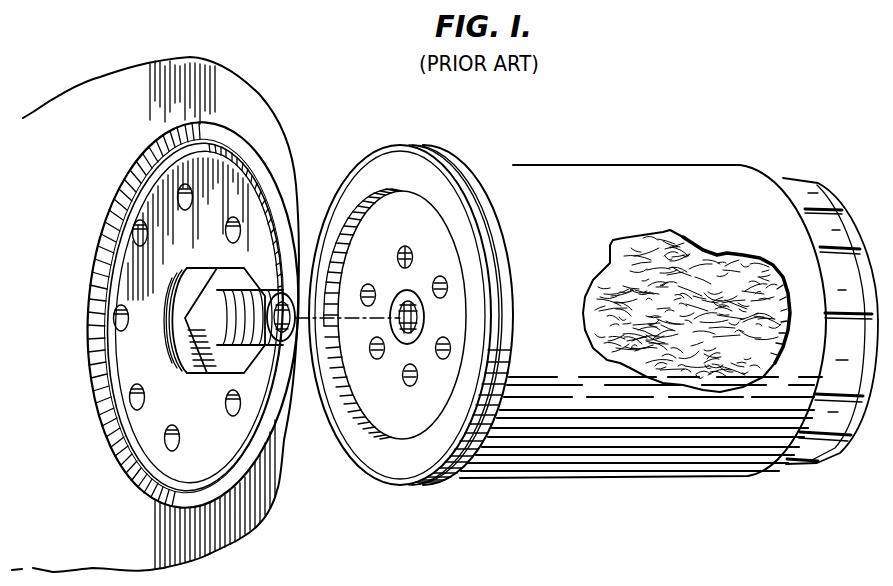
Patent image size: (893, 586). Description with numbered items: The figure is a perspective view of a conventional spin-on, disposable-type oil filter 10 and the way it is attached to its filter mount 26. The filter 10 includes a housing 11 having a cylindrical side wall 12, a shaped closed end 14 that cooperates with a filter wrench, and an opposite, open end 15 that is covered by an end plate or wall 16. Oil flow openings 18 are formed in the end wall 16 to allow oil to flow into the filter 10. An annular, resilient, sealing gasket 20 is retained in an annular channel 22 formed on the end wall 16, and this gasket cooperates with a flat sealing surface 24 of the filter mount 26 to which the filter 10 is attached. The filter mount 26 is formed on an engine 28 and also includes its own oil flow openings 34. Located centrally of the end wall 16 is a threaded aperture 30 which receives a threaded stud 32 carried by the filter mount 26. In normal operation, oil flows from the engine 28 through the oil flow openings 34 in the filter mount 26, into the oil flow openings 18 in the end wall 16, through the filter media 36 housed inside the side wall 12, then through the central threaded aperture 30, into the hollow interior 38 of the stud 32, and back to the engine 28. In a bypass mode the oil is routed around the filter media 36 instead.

The fluid filter 10 is at (669, 310).
The housing 11 is at (705, 187).
The cylindrical side wall 12 is at (652, 472).
The shaped closed end 14 is at (817, 197).
The open end 15 is at (473, 165).
The end plate 16 is at (420, 227).
The oil flow openings 18 is at (404, 384).
The sealing gasket 20 is at (430, 301).
The annular channel 22 is at (480, 248).
The flat sealing surface 24 is at (117, 355).
The filter mount 26 is at (153, 158).
The engine 28 is at (255, 116).
The threaded aperture 30 is at (400, 357).
The threaded stud 32 is at (262, 290).
The oil flow openings 34 is at (231, 409).
The filter media 36 is at (697, 272).
The hollow interior 38 is at (277, 362).